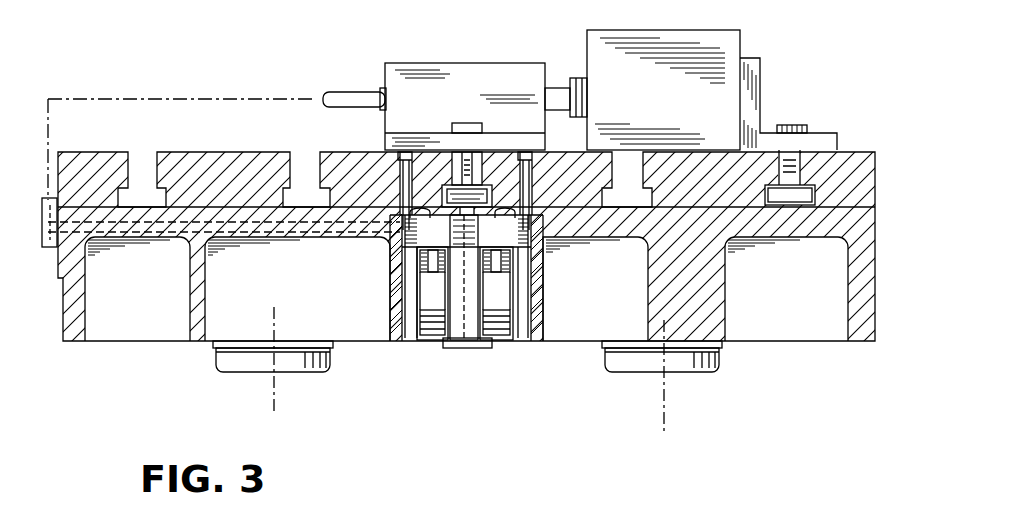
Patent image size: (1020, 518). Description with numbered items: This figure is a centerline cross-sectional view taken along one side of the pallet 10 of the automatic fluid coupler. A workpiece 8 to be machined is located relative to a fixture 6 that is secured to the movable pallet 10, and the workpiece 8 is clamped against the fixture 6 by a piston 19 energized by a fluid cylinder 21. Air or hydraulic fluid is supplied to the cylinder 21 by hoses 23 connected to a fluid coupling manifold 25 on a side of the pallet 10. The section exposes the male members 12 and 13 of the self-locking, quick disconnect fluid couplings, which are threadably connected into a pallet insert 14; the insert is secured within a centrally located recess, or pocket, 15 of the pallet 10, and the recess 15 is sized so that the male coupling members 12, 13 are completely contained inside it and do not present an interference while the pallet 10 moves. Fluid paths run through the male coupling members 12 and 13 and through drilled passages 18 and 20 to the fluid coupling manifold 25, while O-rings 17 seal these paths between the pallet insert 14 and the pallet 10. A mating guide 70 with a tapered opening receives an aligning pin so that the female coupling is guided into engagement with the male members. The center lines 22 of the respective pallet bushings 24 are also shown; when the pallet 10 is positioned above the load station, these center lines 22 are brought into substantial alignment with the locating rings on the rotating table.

The fixture 6 is at (762, 84).
The workpiece 8 is at (638, 107).
The pallet 10 is at (125, 352).
The male member 12 is at (418, 322).
The male member 13 is at (520, 328).
The pallet insert 14 is at (393, 247).
The recess 15 is at (395, 322).
The O-rings 17 is at (397, 270).
The drilled passage 18 is at (183, 243).
The piston 19 is at (558, 86).
The drilled passage 20 is at (505, 212).
The fluid cylinder 21 is at (490, 58).
The center lines 22 is at (272, 400).
The hoses 23 is at (340, 90).
The pallet bushings 24 is at (235, 372).
The fluid coupling manifold 25 is at (52, 240).
The mating guide 70 is at (463, 343).